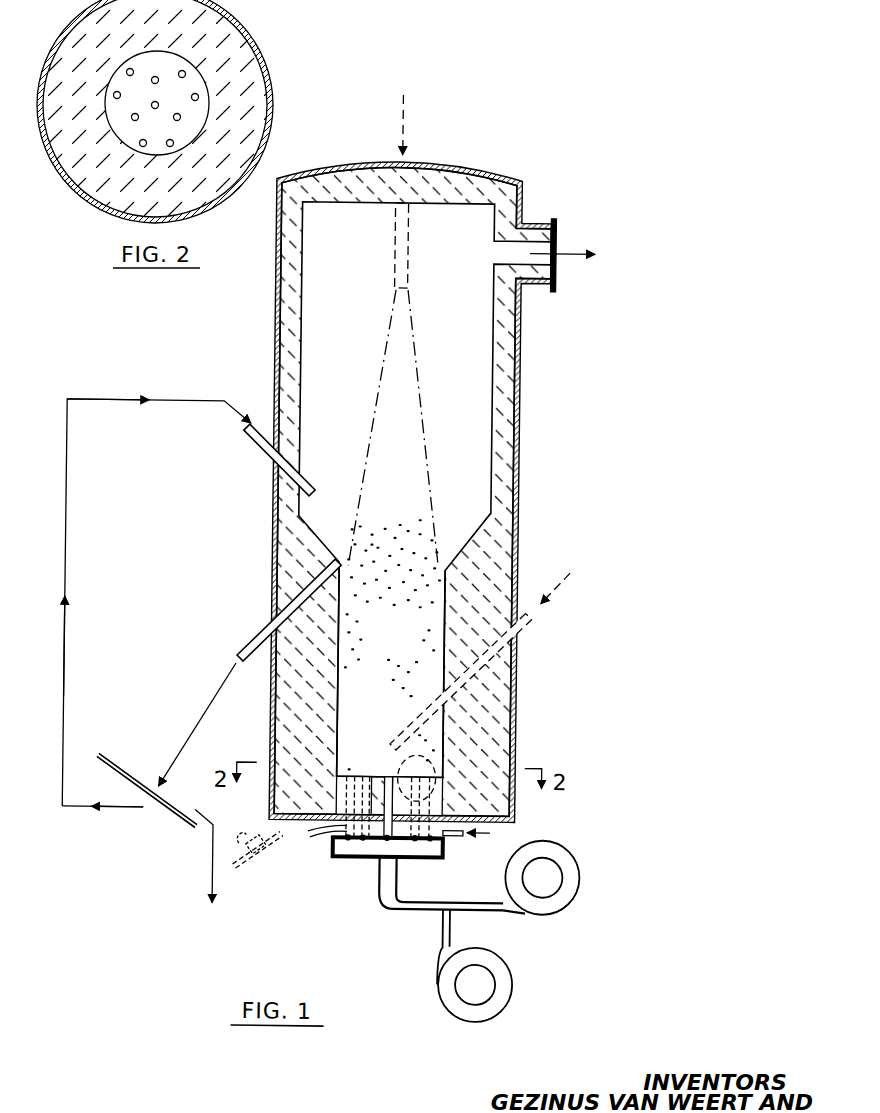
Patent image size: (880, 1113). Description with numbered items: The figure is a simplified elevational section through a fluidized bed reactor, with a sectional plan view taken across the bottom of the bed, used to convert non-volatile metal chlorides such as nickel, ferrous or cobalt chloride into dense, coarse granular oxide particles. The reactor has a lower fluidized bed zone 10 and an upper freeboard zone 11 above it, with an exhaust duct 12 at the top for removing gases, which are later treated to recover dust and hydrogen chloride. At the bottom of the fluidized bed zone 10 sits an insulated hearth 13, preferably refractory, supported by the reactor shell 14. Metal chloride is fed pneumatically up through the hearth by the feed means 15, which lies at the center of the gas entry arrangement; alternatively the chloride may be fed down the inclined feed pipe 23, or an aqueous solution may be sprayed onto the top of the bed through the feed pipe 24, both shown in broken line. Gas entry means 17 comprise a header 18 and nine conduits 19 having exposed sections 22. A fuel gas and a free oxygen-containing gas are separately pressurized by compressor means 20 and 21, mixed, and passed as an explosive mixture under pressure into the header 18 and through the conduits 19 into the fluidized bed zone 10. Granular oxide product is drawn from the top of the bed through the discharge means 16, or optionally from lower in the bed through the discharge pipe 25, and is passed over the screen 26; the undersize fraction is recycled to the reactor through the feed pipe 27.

In FIG. 1, the lower fluidized bed zone 10 is at (349, 681).
In FIG. 1, the upper freeboard zone 11 is at (477, 399).
In FIG. 1, the exhaust duct 12 is at (519, 237).
In FIG. 2, the insulated hearth 13 is at (183, 128).
In FIG. 1, the insulated hearth 13 is at (369, 773).
In FIG. 2, the reactor shell 14 is at (68, 182).
In FIG. 1, the reactor shell 14 is at (526, 804).
In FIG. 2, the feed means 15 is at (154, 102).
In FIG. 1, the feed means 15 is at (459, 838).
In FIG. 1, the discharge means 16 is at (255, 640).
In FIG. 1, the gas entry means 17 is at (325, 896).
In FIG. 1, the header 18 is at (367, 858).
In FIG. 2, the conduits 19 is at (192, 70).
In FIG. 1, the conduits 19 is at (417, 792).
In FIG. 1, the compressor means 20 is at (518, 984).
In FIG. 1, the compressor means 21 is at (583, 874).
In FIG. 1, the exposed sections 22 is at (339, 819).
In FIG. 1, the inclined feed pipe 23 is at (505, 652).
In FIG. 1, the feed pipe 24 is at (407, 244).
In FIG. 1, the discharge pipe 25 is at (268, 838).
In FIG. 1, the screen 26 is at (143, 786).
In FIG. 1, the feed pipe 27 is at (251, 440).